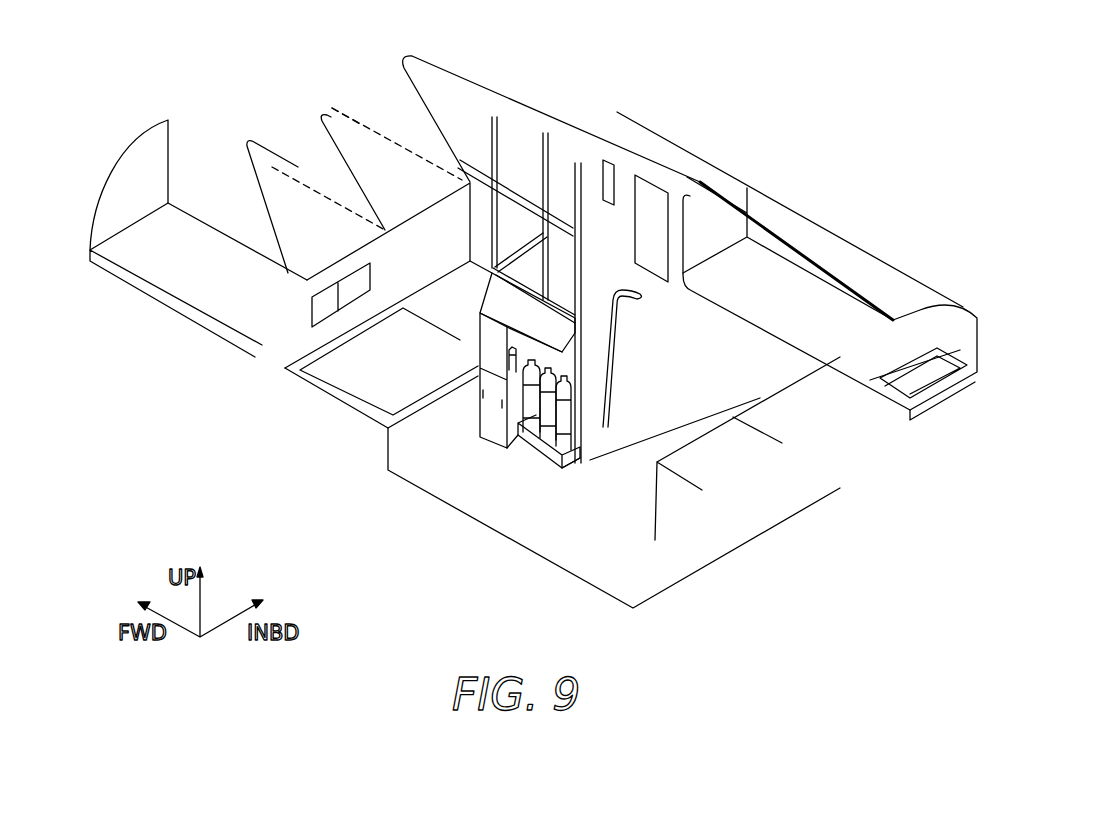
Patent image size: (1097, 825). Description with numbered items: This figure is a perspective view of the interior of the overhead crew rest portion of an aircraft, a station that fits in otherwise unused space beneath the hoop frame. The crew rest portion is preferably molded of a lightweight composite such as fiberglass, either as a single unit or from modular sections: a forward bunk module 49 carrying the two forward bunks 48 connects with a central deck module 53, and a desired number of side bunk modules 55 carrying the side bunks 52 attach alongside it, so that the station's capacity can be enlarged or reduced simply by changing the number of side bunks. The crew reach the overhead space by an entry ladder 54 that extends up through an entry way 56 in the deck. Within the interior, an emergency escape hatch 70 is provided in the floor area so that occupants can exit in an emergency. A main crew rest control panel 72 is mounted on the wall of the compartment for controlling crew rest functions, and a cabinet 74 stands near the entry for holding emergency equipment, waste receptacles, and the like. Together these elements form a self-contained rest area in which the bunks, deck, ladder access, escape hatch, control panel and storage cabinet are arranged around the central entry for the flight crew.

The forward bunks 48 is at (302, 208).
The forward bunk module 49 is at (318, 95).
The side bunks 52 is at (523, 142).
The central deck module 53 is at (573, 533).
The entry ladder 54 is at (587, 277).
The side bunk modules 55 is at (697, 150).
The entry way 56 is at (597, 367).
The emergency escape hatch 70 is at (367, 393).
The main crew rest control panel 72 is at (677, 182).
The cabinet 74 is at (492, 450).